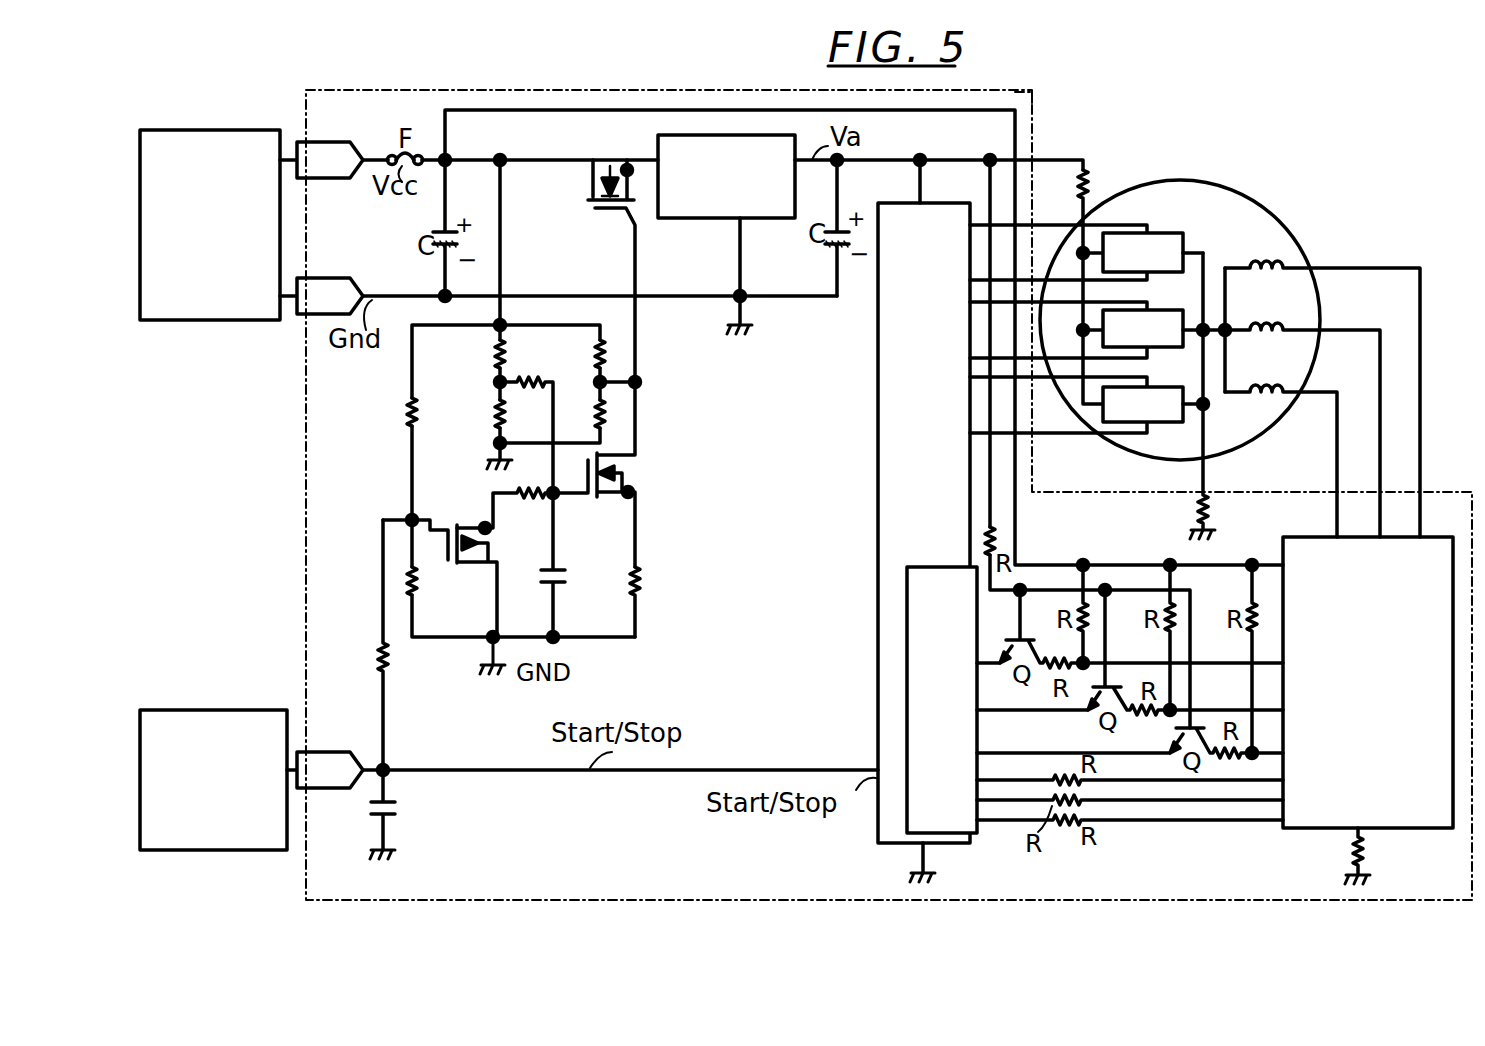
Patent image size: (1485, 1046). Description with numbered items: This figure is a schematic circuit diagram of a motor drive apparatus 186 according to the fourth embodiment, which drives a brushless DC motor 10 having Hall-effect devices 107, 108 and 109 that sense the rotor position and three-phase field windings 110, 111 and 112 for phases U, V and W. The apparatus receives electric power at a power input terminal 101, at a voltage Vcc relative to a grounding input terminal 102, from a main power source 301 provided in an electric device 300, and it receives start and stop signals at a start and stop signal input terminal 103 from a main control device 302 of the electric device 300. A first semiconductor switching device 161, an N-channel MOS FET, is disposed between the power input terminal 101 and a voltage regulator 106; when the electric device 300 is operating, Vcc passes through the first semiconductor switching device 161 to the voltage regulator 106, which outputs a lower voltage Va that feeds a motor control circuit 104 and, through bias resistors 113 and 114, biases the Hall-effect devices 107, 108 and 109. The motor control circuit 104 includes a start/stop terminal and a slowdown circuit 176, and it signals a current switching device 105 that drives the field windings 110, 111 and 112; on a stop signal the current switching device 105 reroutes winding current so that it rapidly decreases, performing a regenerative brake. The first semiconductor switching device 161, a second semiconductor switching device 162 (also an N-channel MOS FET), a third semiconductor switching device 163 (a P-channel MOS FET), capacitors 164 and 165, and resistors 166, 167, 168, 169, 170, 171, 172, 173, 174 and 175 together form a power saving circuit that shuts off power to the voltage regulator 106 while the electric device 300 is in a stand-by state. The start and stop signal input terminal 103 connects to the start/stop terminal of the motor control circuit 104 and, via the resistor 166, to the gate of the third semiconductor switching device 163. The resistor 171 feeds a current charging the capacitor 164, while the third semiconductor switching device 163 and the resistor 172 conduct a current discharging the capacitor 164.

The electric device 300 is at (229, 98).
The main power source 301 is at (180, 330).
The main control device 302 is at (183, 860).
The power input terminal 101 is at (308, 140).
The grounding input terminal 102 is at (308, 276).
The start and stop signal input terminal 103 is at (318, 792).
The motor control circuit 104 is at (876, 436).
The current switching device 105 is at (1320, 832).
The voltage regulator 106 is at (700, 220).
The Hall-effect device H1 107 is at (1150, 232).
The Hall-effect device H2 108 is at (1186, 310).
The Hall-effect device H3 109 is at (1165, 425).
The DC motor 10 is at (1282, 214).
The field winding 110 is at (1296, 262).
The field winding 111 is at (1296, 324).
The field winding 112 is at (1296, 386).
The bias resistor 113 is at (1094, 160).
The bias resistor 114 is at (1188, 516).
The first semiconductor switching device 161 is at (606, 152).
The second semiconductor switching device 162 is at (632, 478).
The third semiconductor switching device 163 is at (470, 526).
The capacitor 164 is at (570, 580).
The capacitor 165 is at (398, 808).
The resistor 166 is at (374, 656).
The resistor 167 is at (405, 418).
The resistor 168 is at (420, 582).
The resistor 169 is at (494, 354).
The resistor 170 is at (493, 412).
The resistor 171 is at (540, 366).
The resistor 172 is at (526, 500).
The resistor 173 is at (608, 352).
The resistor 174 is at (608, 418).
The resistor 175 is at (641, 580).
The slowdown circuit 176 is at (905, 632).
The motor drive apparatus 186 is at (1034, 96).